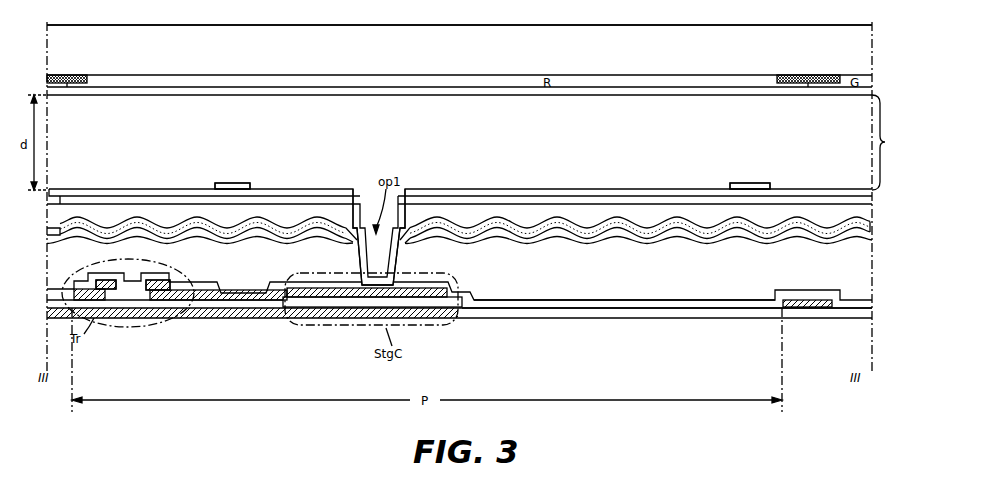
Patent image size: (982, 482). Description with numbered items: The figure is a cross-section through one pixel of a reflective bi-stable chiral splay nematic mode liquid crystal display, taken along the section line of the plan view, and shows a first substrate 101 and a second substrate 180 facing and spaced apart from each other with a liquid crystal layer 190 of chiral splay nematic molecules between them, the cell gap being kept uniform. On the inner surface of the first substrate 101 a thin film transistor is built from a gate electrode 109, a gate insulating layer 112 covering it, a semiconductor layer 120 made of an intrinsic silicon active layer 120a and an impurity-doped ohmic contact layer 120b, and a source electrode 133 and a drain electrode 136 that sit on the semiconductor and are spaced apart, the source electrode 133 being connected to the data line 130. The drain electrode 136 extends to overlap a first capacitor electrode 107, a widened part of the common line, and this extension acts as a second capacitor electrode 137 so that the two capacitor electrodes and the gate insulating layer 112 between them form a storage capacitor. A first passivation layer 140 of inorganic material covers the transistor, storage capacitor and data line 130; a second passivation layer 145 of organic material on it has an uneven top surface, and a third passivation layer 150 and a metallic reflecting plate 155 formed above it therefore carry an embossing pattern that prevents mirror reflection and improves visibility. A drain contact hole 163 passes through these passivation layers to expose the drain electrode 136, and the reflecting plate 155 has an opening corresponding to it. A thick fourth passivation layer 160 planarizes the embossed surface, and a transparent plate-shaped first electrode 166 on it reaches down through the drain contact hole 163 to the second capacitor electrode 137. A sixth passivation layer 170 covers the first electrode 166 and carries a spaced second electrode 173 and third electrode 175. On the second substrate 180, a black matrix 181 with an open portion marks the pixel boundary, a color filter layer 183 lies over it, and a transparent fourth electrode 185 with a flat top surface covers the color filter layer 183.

The first substrate 101 is at (837, 360).
The first capacitor electrode 107 is at (337, 312).
The gate electrode 109 is at (110, 302).
The gate insulating layer 112 is at (569, 312).
The semiconductor layer 120 is at (165, 343).
The active layer 120a is at (110, 292).
The ohmic contact layer 120b is at (160, 292).
The data line 130 is at (808, 300).
The source electrode 133 is at (108, 280).
The drain electrode 136 is at (165, 280).
The second capacitor electrode 137 is at (322, 288).
The first passivation layer 140 is at (652, 302).
The second passivation layer 145 is at (172, 222).
The third passivation layer 150 is at (236, 237).
The reflecting plate 155 is at (284, 223).
The fourth passivation layer 160 is at (105, 207).
The drain contact hole 163 is at (364, 214).
The first electrode 166 is at (160, 198).
The sixth passivation layer 170 is at (293, 190).
The second electrode 173 is at (244, 184).
The third electrode 175 is at (750, 184).
The second substrate 180 is at (867, 49).
The black matrix 181 is at (67, 75).
The color filter layer 183 is at (217, 82).
The fourth electrode 185 is at (172, 93).
The liquid crystal layer 190 is at (891, 142).